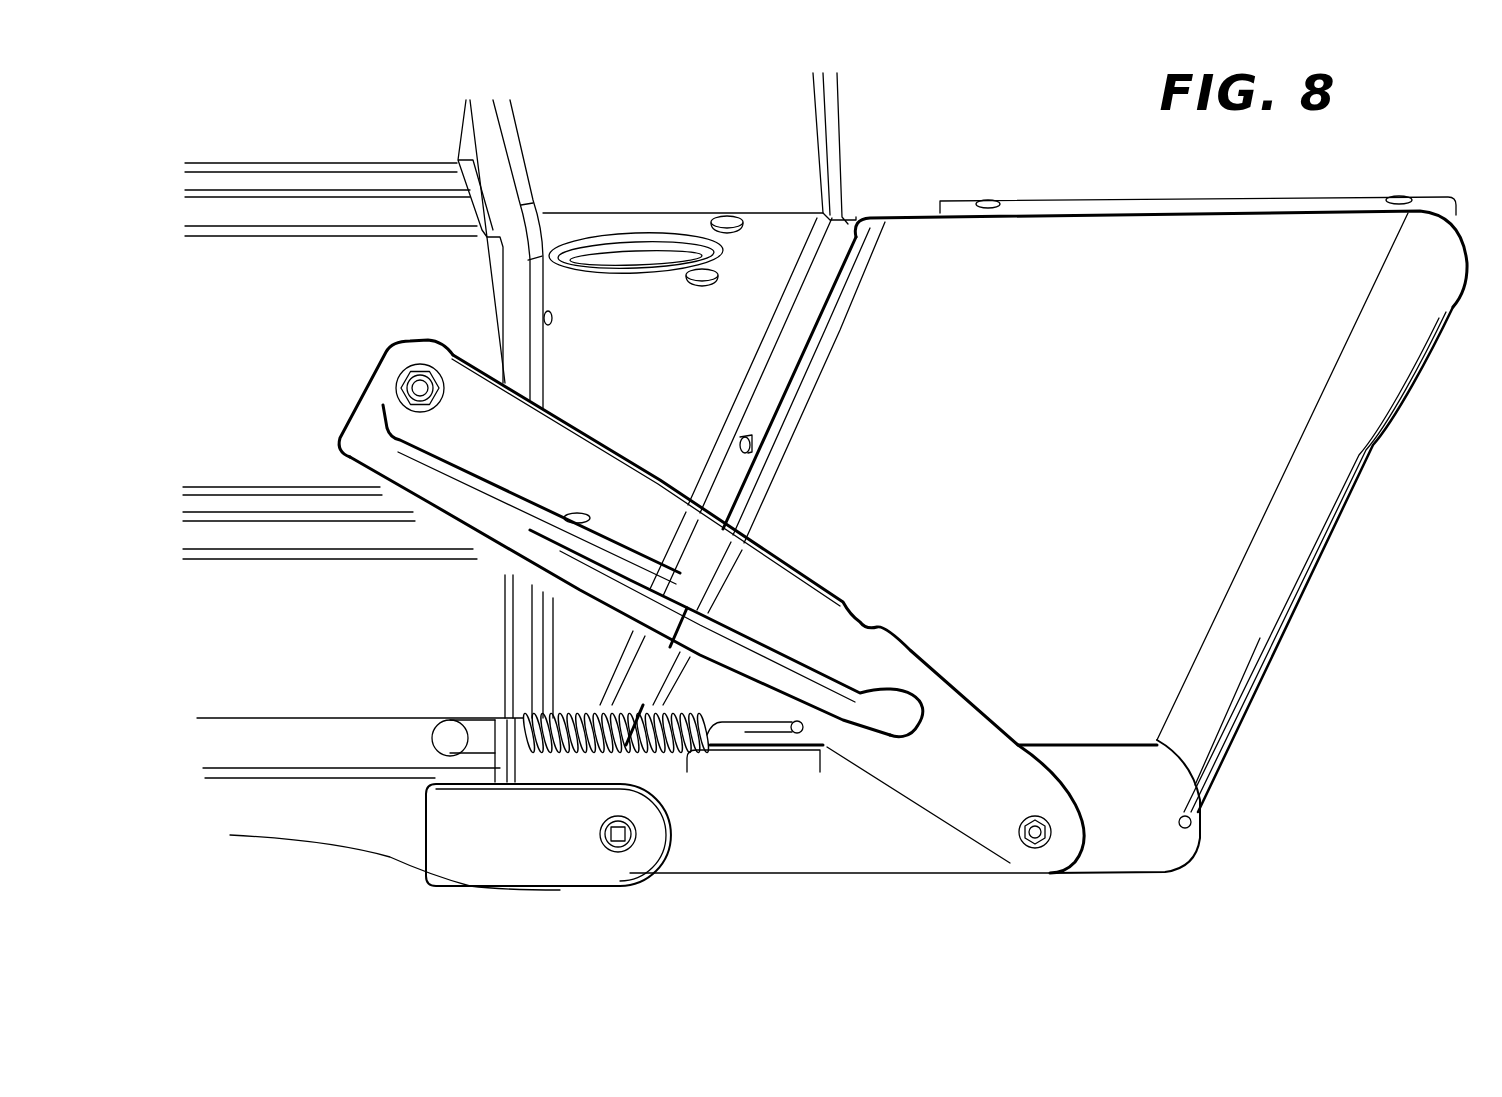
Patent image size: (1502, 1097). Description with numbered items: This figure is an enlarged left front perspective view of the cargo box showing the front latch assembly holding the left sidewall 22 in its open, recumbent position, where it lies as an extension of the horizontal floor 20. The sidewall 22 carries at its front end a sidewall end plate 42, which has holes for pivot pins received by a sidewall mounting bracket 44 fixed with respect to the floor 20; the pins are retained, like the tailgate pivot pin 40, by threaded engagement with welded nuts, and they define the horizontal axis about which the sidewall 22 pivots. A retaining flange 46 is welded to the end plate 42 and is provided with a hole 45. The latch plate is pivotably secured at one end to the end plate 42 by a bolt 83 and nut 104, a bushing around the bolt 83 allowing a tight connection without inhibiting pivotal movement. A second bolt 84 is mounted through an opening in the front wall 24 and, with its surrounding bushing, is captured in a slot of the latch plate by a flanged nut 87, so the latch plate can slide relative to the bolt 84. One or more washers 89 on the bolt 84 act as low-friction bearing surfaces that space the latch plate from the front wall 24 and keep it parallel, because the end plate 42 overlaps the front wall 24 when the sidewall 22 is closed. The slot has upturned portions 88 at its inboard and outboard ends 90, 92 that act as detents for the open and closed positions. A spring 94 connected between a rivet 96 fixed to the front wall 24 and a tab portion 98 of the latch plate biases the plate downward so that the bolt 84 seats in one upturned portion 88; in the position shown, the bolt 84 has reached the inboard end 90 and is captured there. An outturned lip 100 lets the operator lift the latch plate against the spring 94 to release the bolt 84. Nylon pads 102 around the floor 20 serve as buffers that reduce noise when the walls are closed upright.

The floor 20 is at (669, 393).
The sidewall 22 is at (1076, 448).
The front wall 24 is at (284, 323).
The pivot pin 40 is at (640, 834).
The sidewall end plate 42 is at (869, 833).
The sidewall mounting bracket 44 is at (559, 844).
The hole 45 is at (1388, 192).
The retaining flange 46 is at (1168, 195).
The bolt 83 is at (1038, 850).
The bolt 84 is at (437, 364).
The flanged nut 87 is at (422, 366).
The upturned portion 88 is at (403, 364).
The washer 89 is at (420, 412).
The inboard end 90 is at (378, 426).
The outboard end 92 is at (673, 606).
The spring 94 is at (687, 770).
The rivet 96 is at (432, 742).
The tab portion 98 is at (818, 757).
The outturned lip 100 is at (502, 562).
The nylon pad 102 is at (553, 319).
The nut 104 is at (1020, 825).